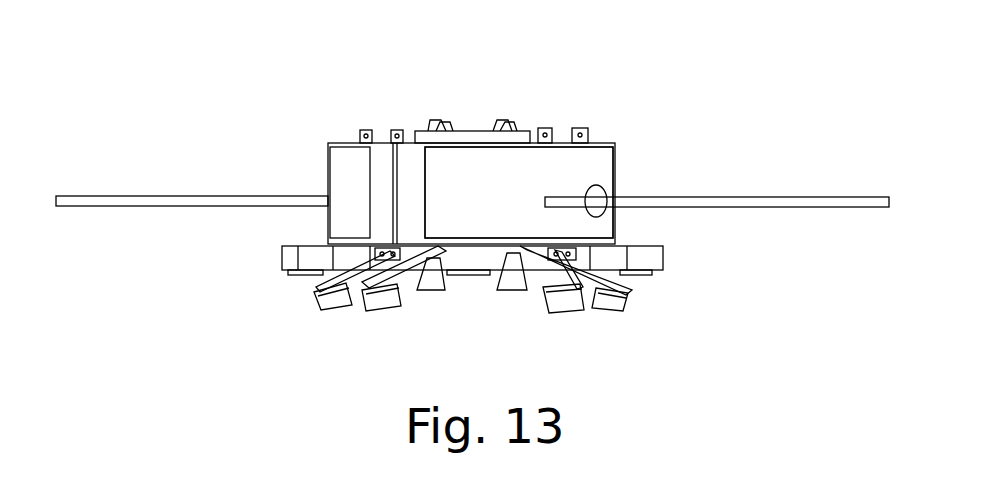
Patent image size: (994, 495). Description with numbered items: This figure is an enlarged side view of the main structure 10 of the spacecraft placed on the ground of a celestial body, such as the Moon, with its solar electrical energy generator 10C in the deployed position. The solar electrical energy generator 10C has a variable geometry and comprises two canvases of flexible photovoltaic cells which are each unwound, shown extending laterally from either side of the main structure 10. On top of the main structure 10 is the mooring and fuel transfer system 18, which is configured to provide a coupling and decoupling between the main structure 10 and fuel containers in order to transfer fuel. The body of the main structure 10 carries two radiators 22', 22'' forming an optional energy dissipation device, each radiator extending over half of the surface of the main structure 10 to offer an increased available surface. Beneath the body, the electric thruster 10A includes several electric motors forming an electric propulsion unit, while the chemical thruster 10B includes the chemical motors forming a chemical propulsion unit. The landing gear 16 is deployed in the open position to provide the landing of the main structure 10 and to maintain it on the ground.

The main structure 10 is at (598, 100).
The mooring and fuel transfer system 18 is at (510, 105).
The radiator 22' is at (311, 174).
The radiator 22'' is at (559, 174).
The solar electrical energy generator 10C is at (192, 197).
The electric thruster 10A is at (288, 257).
The chemical thruster 10B is at (435, 292).
The landing gear 16 is at (378, 302).